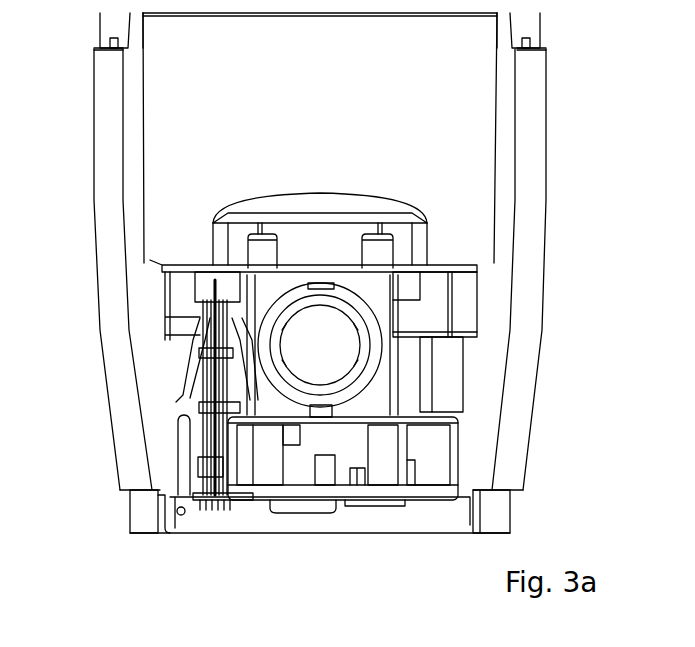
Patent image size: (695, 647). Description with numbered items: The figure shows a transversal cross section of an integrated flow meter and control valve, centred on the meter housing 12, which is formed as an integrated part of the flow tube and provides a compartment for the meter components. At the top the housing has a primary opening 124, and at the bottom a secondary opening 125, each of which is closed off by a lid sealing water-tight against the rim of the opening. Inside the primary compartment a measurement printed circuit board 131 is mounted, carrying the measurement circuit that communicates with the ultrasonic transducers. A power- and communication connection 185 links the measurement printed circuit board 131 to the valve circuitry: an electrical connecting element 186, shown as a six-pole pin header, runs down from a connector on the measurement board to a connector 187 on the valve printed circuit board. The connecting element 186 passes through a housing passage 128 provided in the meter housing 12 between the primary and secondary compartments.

The meter housing 12 is at (533, 165).
The primary opening 124 is at (142, 33).
The secondary opening 125 is at (181, 518).
The housing passage 128 is at (196, 373).
The measurement printed circuit board 131 is at (177, 269).
The power- and communication connection 185 is at (198, 403).
The electrical connecting element 186 is at (205, 440).
The connector 187 is at (207, 482).